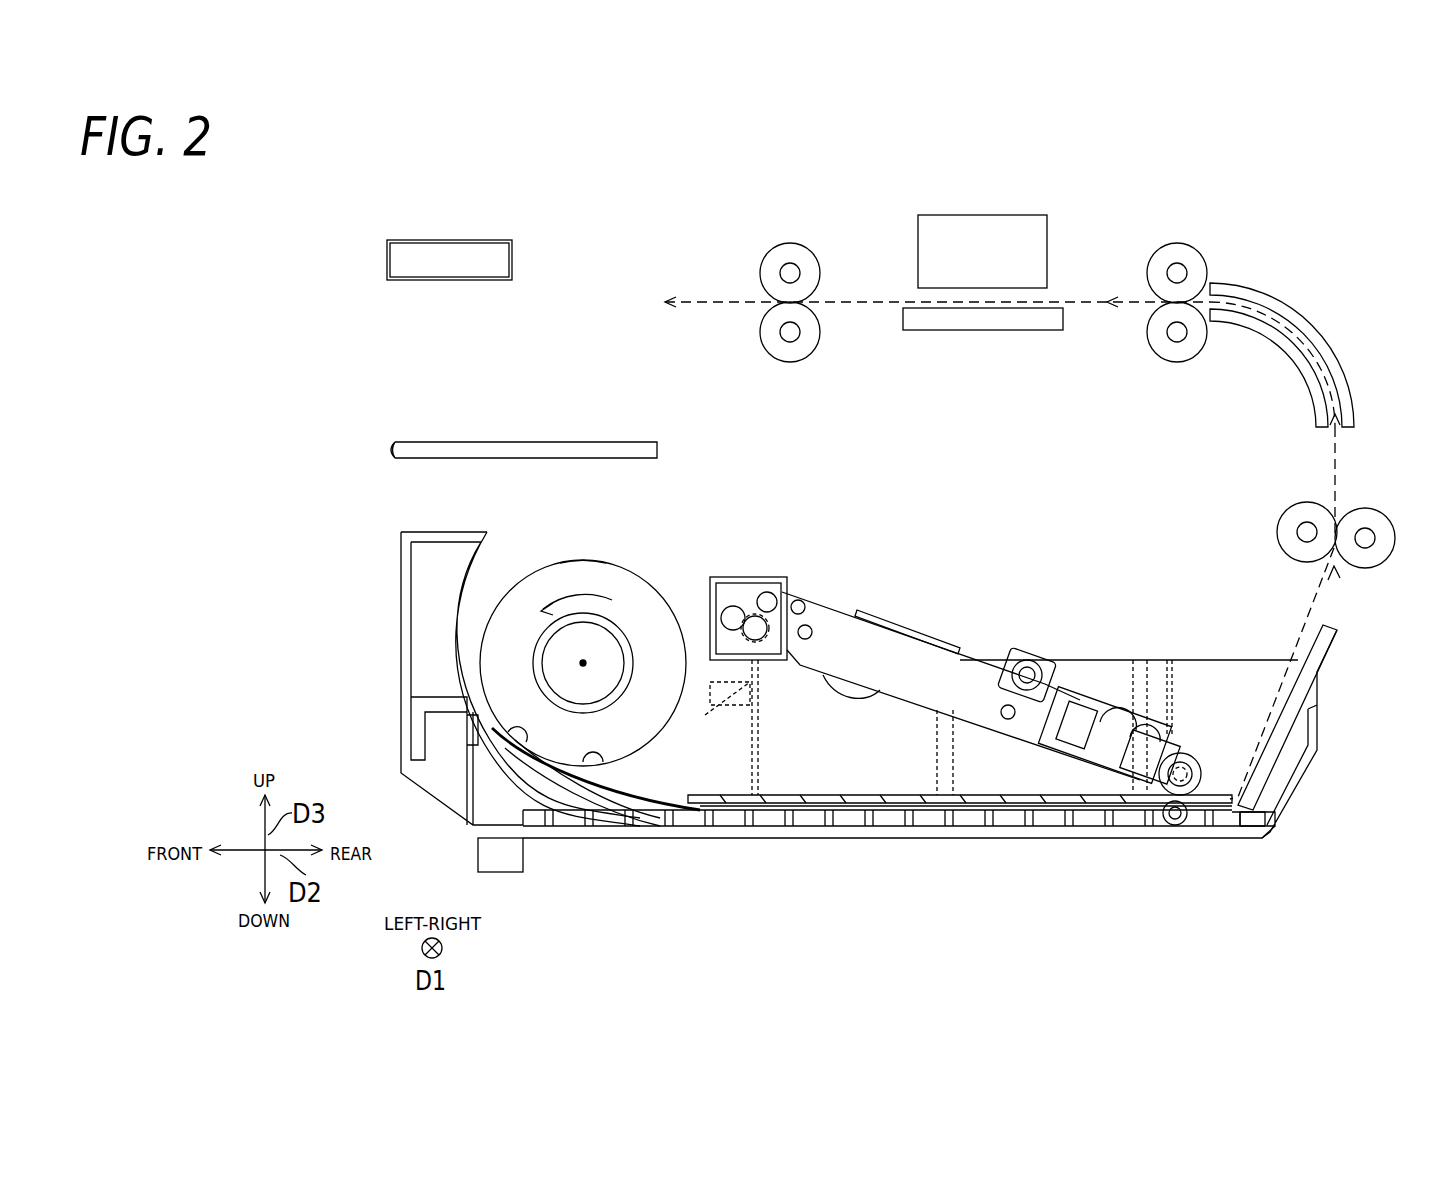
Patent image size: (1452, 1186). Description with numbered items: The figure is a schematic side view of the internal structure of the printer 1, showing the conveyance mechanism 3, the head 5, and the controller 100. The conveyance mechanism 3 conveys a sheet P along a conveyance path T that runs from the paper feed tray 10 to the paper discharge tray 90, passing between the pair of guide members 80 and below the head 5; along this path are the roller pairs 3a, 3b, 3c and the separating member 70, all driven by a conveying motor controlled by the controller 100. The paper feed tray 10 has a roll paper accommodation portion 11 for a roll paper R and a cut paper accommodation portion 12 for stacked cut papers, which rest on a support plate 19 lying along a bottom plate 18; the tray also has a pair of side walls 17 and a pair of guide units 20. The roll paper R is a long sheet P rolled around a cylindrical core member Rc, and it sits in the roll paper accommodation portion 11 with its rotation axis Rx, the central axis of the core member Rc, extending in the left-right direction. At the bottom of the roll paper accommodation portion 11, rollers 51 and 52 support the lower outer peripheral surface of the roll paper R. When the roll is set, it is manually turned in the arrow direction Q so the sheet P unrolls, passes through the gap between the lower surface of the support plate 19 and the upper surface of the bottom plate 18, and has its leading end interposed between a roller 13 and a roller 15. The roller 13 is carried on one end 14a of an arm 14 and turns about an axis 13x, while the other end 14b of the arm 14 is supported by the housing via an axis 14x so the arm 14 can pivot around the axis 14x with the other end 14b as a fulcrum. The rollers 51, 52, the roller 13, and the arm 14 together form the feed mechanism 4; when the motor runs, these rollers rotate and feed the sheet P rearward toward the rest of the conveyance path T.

The printer 1 is at (288, 214).
The controller 100 is at (465, 240).
The paper discharge tray 90 is at (468, 445).
The conveyance mechanism 3 is at (1268, 219).
The roller pair 3a is at (1373, 504).
The roller pair 3b is at (1188, 239).
The roller pair 3c is at (781, 239).
The head 5 is at (993, 214).
The guide members 80 is at (1320, 342).
The conveyance path T is at (694, 300).
The paper feed tray 10 is at (350, 645).
The roll paper accommodation portion 11 is at (586, 560).
The roll paper R is at (622, 565).
The core member Rc is at (613, 623).
The rotation axis Rx is at (586, 660).
The arrow direction Q is at (572, 593).
The roller 51 is at (520, 748).
The roller 52 is at (588, 770).
The sheet P is at (630, 812).
The feed mechanism 4 is at (1050, 560).
The cut paper accommodation portion 12 is at (913, 557).
The arm 14 is at (963, 680).
The axis 14x is at (750, 578).
The other end of arm 14b is at (790, 597).
The one end of arm 14a is at (1140, 690).
The guide units 20 is at (1088, 662).
The side walls 17 is at (1232, 672).
The roller 13 is at (1185, 752).
The axis 13x is at (1200, 770).
The roller 15 is at (1173, 826).
The support plate 19 is at (862, 795).
The bottom plate 18 is at (848, 826).
The separating member 70 is at (1277, 748).